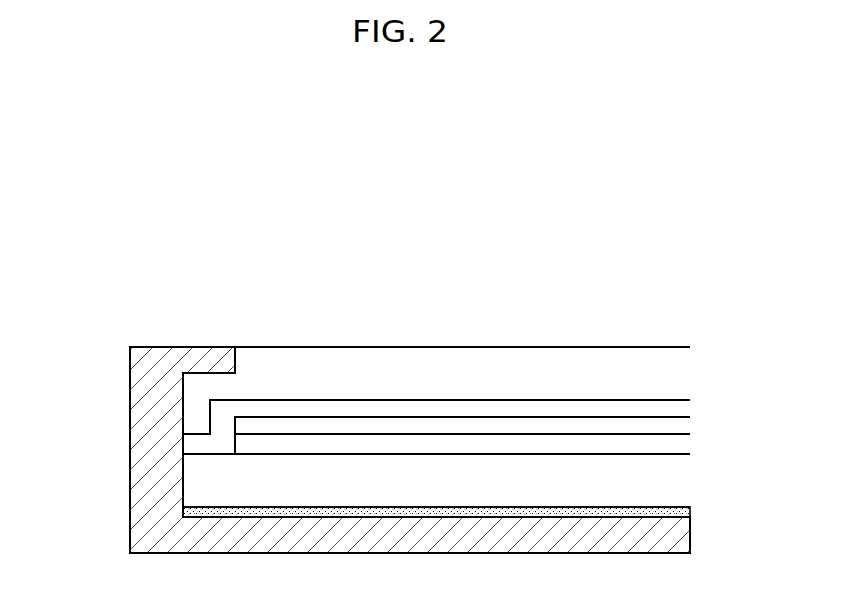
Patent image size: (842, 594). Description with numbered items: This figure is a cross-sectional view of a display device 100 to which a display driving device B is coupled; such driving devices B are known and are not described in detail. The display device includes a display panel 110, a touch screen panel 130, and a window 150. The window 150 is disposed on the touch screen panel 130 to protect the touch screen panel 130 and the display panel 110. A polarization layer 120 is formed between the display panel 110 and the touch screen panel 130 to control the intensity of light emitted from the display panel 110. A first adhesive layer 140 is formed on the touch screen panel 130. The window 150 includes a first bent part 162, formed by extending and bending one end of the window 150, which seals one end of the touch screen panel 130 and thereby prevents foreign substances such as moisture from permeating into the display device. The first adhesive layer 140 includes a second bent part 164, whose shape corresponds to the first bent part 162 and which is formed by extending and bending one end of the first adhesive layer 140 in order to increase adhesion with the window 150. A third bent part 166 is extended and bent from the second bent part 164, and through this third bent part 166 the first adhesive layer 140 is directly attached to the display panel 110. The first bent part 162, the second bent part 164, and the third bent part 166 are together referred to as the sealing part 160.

The display device 100 is at (416, 192).
The display panel 110 is at (678, 489).
The polarization layer 120 is at (678, 445).
The touch screen panel 130 is at (678, 425).
The first adhesive layer 140 is at (678, 408).
The window 150 is at (678, 355).
The sealing part 160 is at (66, 377).
The first bent part 162 is at (197, 403).
The second bent part 164 is at (223, 422).
The third bent part 166 is at (190, 450).
The display driving device B is at (678, 534).